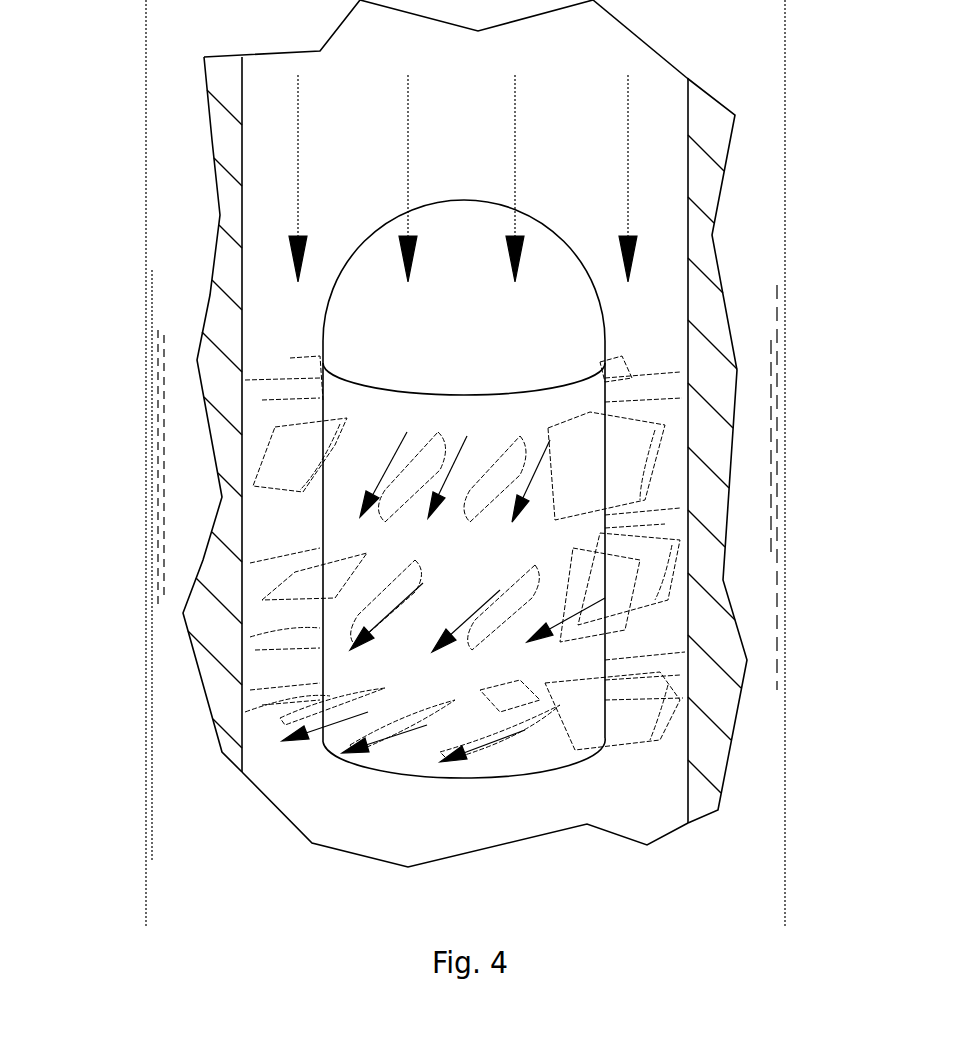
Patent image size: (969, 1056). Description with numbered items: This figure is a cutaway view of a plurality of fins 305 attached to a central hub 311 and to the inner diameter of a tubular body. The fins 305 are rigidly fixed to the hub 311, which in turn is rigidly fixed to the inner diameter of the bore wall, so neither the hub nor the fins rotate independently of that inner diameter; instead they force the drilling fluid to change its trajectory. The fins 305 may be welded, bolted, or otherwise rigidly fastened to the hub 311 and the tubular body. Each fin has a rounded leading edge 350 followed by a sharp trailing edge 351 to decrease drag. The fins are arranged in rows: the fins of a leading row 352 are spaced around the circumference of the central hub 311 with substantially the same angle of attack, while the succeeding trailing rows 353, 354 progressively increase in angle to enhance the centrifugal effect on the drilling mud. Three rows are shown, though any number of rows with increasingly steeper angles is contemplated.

The fins 305 is at (622, 438).
The central hub 311 is at (565, 322).
The rounded leading edge 350 is at (283, 425).
The sharp trailing edge 351 is at (305, 503).
The leading row 352 is at (724, 451).
The trailing row 353 is at (721, 556).
The trailing row 354 is at (724, 665).